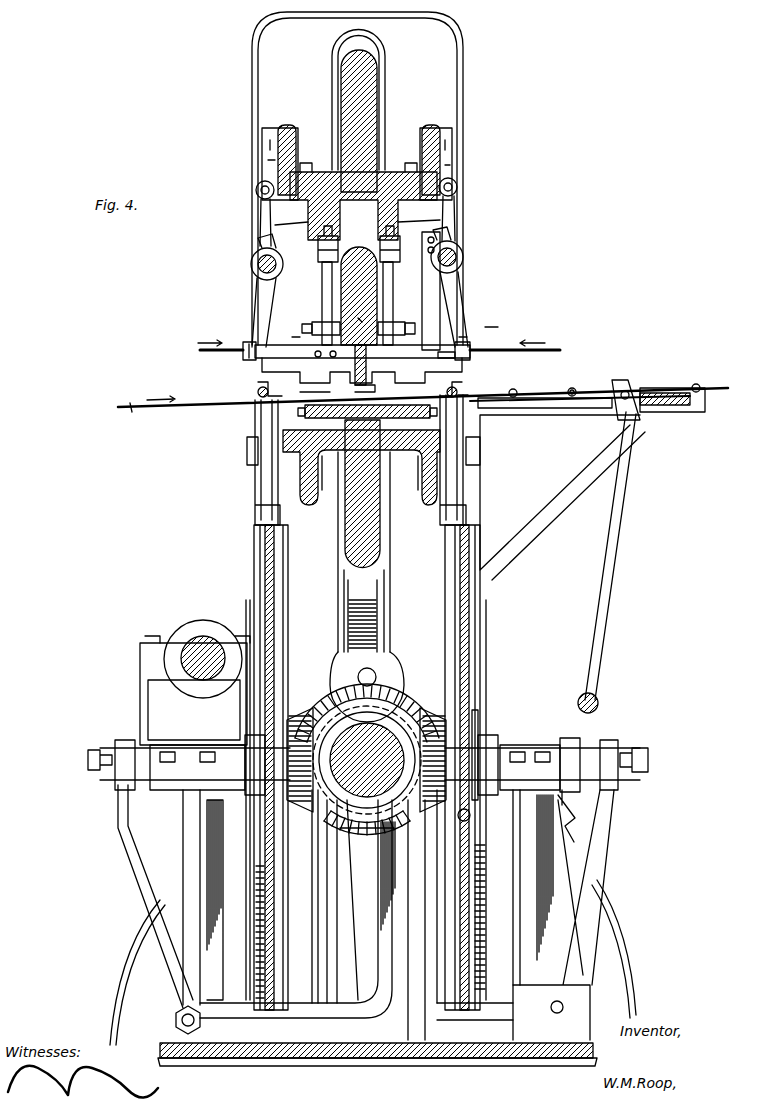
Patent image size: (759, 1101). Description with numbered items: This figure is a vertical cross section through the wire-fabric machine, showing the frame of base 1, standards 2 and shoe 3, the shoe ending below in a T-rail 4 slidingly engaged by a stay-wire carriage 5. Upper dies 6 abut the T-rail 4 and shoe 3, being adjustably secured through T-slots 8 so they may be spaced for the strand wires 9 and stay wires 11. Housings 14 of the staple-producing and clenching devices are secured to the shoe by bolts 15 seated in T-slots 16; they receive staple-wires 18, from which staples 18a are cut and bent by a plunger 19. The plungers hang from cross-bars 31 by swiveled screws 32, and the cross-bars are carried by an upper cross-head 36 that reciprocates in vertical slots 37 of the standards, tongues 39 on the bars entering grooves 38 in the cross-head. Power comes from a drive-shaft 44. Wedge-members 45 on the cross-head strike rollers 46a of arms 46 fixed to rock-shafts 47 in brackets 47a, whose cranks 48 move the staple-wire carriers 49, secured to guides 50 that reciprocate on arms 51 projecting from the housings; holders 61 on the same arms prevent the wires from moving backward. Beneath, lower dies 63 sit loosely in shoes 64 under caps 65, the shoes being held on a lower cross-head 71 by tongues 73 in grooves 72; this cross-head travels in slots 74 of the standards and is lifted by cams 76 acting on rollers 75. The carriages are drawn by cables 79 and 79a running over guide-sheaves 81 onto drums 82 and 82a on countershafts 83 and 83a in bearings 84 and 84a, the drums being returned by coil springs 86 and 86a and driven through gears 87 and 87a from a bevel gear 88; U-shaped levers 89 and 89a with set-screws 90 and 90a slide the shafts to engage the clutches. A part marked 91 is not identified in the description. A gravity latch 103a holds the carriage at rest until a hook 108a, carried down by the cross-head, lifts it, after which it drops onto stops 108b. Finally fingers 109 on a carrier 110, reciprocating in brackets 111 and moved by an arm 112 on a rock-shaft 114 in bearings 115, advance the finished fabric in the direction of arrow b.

The base 1 is at (380, 1060).
The standards 2 is at (252, 95).
The shoe 3 is at (357, 247).
The T-rail 4 is at (349, 375).
The carriage 5 is at (314, 376).
The upper dies 6 is at (310, 356).
The T-slots 8 is at (356, 356).
The strand wires 9 is at (391, 395).
The arrow b is at (146, 391).
The stay wires 11 is at (518, 392).
The housings 14 is at (312, 322).
The bolts 15 is at (503, 295).
The T-slots 16 is at (357, 309).
The staple-wires 18 is at (200, 352).
The staples 18a is at (574, 388).
The plunger 19 is at (322, 290).
The cross-bars 31 is at (275, 226).
The screws 32 is at (358, 247).
The upper reciprocating cross-head 36 is at (341, 92).
The vertical slots 37 is at (345, 52).
The longitudinal grooves 38 is at (357, 159).
The tongues 39 is at (363, 199).
The drive-shaft 44 is at (150, 606).
The wedge-members 45 is at (265, 136).
The arms 46 is at (260, 210).
The rollers 46a is at (256, 190).
The rock-shafts 47 is at (251, 268).
The brackets 47a is at (251, 260).
The cranks 48 is at (255, 300).
The staple-wire carriers 49 is at (455, 360).
The guides 50 is at (240, 362).
The arms 51 is at (245, 338).
The holders 61 is at (515, 317).
The lower dies 63 is at (367, 408).
The shoes 64 is at (361, 494).
The caps 65 is at (357, 410).
The cross-head 71 is at (345, 540).
The longitudinal grooves 72 is at (361, 467).
The tongues 73 is at (359, 478).
The slots 74 is at (255, 398).
The rollers 75 is at (338, 660).
The cams 76 is at (332, 695).
The cable 79 is at (258, 598).
The cable 79a is at (470, 622).
The guide-sheaves 81 is at (255, 512).
The drum 82 is at (254, 555).
The drum 82a is at (480, 638).
The countershaft 83 is at (140, 748).
The countershaft 83a is at (618, 748).
The bearings 84 is at (185, 862).
The bearings 84a is at (432, 1045).
The coil spring 86 is at (247, 718).
The coil spring 86a is at (478, 680).
The gear 87 is at (290, 768).
The gear 87a is at (445, 712).
The bevel gear 88 is at (420, 708).
The U-shaped lever 89 is at (135, 890).
The U-shaped lever 89a is at (605, 870).
The set-screw 90 is at (88, 765).
The set-screw 90a is at (648, 760).
The gear segment 91 is at (365, 819).
The gravity latch 103a is at (545, 410).
The hook 108a is at (441, 300).
The stops 108b is at (466, 400).
The fingers 109 is at (632, 382).
The carrier 110 is at (660, 412).
The brackets 111 is at (522, 558).
The arm 112 is at (606, 580).
The rock-shaft 114 is at (598, 704).
The bearings 115 is at (578, 822).